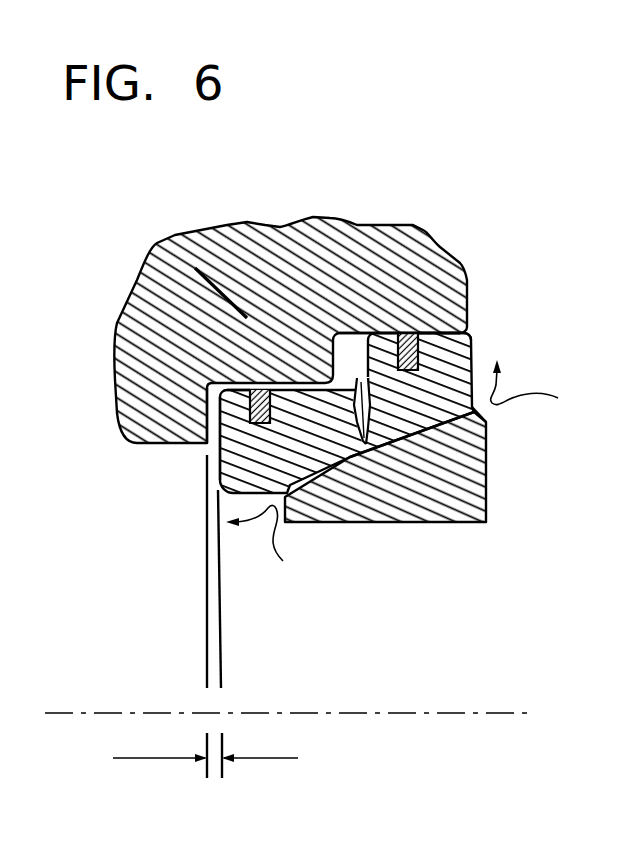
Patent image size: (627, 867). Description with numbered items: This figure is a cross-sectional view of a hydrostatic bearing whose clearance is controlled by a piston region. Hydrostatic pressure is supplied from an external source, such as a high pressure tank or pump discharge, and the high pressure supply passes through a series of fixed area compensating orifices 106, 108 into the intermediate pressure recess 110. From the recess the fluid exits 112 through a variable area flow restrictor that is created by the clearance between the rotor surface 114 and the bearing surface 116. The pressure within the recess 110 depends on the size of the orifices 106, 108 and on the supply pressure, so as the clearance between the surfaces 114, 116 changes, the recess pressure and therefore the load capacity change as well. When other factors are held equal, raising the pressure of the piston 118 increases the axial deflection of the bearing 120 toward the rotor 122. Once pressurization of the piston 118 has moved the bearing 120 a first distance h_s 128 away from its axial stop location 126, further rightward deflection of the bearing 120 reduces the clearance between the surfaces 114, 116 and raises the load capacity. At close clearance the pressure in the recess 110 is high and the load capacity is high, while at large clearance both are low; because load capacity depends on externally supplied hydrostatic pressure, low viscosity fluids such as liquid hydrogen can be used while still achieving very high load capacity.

The fixed area compensating orifice 106 is at (193, 268).
The fixed area compensating orifice 108 is at (374, 395).
The intermediate pressure recess 110 is at (373, 443).
The fluid exit 112 is at (415, 468).
The rotor surface 114 is at (473, 435).
The bearing surface 116 is at (306, 470).
The piston 118 is at (345, 333).
The bearing 120 is at (474, 336).
The rotor 122 is at (475, 502).
The axial stop location 126 is at (203, 445).
The first distance h_s 128 is at (278, 758).